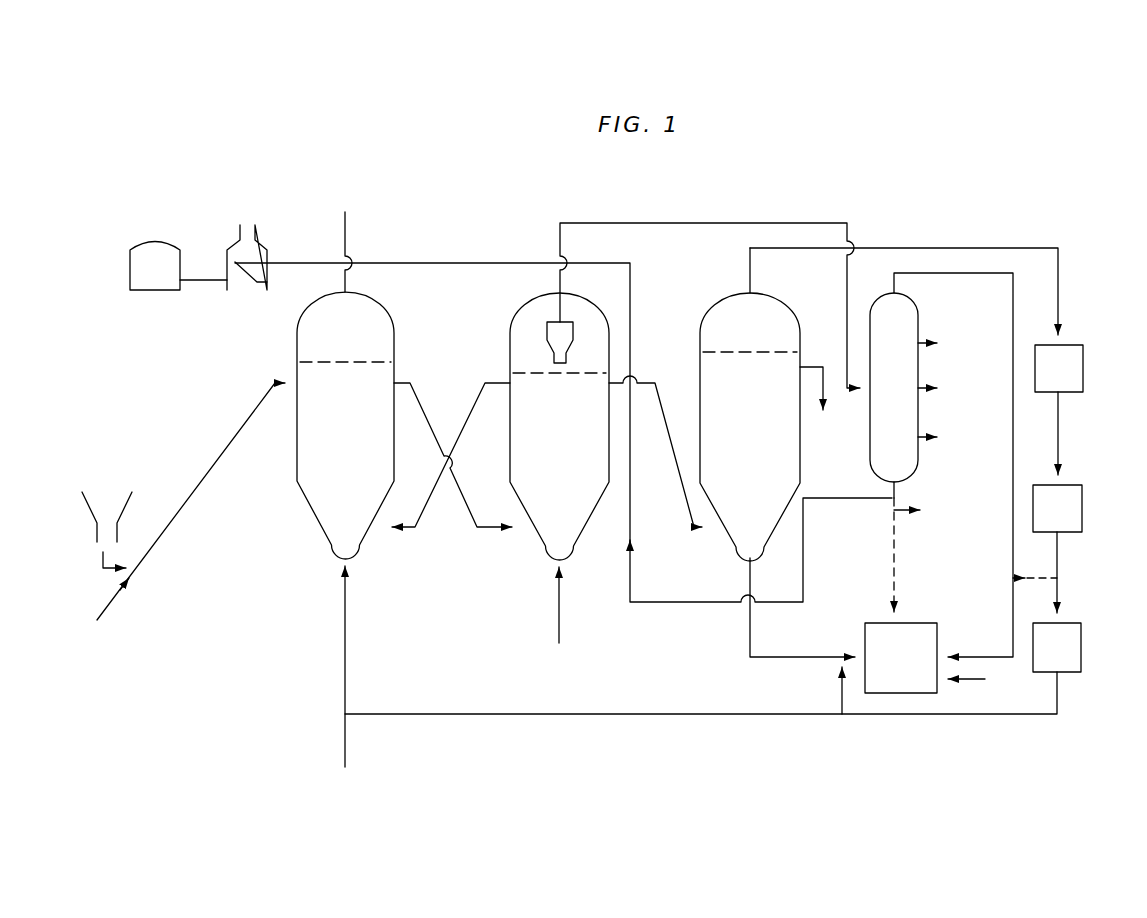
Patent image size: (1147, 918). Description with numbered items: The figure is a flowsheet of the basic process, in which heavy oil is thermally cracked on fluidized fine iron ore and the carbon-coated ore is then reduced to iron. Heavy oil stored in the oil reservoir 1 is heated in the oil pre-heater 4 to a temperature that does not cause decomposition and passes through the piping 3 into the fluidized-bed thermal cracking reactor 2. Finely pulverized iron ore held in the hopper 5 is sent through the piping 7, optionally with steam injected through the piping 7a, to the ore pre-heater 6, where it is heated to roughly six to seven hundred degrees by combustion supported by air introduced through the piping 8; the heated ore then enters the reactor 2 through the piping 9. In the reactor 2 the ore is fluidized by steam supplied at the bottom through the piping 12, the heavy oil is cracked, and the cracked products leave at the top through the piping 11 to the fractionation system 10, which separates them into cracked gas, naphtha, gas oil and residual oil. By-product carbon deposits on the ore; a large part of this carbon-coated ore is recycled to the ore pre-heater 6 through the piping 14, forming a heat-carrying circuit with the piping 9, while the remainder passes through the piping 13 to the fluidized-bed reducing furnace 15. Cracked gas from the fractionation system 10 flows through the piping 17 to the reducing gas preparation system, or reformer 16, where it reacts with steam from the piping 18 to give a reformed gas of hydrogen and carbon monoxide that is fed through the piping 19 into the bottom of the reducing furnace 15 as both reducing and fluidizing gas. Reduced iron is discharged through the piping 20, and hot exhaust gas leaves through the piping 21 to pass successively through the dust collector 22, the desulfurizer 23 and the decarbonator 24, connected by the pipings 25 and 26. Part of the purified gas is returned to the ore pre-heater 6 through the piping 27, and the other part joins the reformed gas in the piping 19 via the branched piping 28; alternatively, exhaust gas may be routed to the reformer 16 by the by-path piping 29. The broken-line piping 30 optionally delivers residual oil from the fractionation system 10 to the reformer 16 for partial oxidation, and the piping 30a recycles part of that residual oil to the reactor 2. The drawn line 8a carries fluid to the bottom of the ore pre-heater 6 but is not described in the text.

The oil reservoir 1 is at (160, 292).
The fluidized-bed thermal cracking reactor 2 is at (510, 343).
The piping 3 is at (450, 262).
The oil pre-heater 4 is at (267, 282).
The hopper 5 is at (133, 510).
The ore pre-heater 6 is at (297, 465).
The piping 7 is at (172, 523).
The piping 7a is at (115, 600).
The piping 8 is at (302, 508).
The gas supply line 8a is at (342, 757).
The piping 9 is at (425, 395).
The fractionation system 10 is at (918, 320).
The piping 11 is at (740, 222).
The piping 12 is at (559, 630).
The piping 13 is at (690, 518).
The piping 14 is at (460, 440).
The fluidized-bed reducing furnace 15 is at (800, 440).
The reducing gas preparation system 16 is at (918, 622).
The piping 17 is at (1013, 300).
The piping 18 is at (978, 678).
The piping 19 is at (750, 628).
The piping 20 is at (815, 365).
The piping 21 is at (957, 248).
The dust collector 22 is at (1083, 370).
The desulfurizer 23 is at (1082, 513).
The decarbonator 24 is at (1080, 652).
The piping 25 is at (1058, 437).
The piping 26 is at (1057, 573).
The piping 27 is at (775, 714).
The branched piping 28 is at (842, 685).
The by-path piping 29 is at (1040, 578).
The piping 30 is at (897, 540).
The piping 30a is at (850, 498).